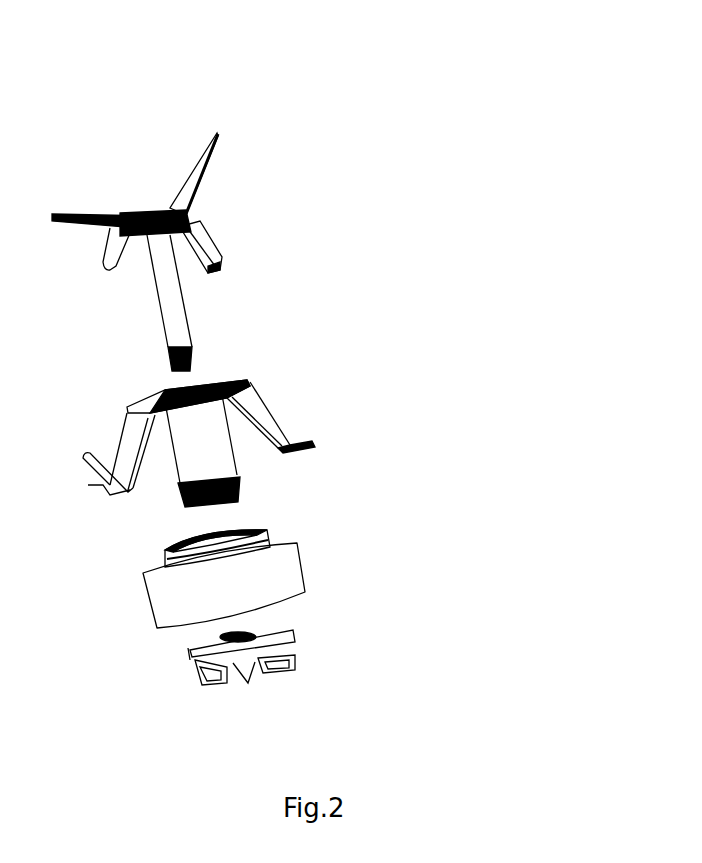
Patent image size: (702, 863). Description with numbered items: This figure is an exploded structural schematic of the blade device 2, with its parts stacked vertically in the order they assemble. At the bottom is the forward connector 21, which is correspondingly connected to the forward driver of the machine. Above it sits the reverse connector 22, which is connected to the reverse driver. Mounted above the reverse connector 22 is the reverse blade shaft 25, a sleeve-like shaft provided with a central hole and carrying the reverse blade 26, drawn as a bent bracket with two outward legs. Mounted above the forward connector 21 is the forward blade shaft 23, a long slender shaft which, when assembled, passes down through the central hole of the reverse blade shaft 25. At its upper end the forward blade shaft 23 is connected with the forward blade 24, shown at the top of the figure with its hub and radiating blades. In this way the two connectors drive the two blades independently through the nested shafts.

The blade device 2 is at (173, 80).
The forward connector 21 is at (297, 658).
The reverse connector 22 is at (305, 587).
The forward blade shaft 23 is at (188, 317).
The forward blade 24 is at (218, 223).
The reverse blade shaft 25 is at (237, 468).
The reverse blade 26 is at (283, 418).